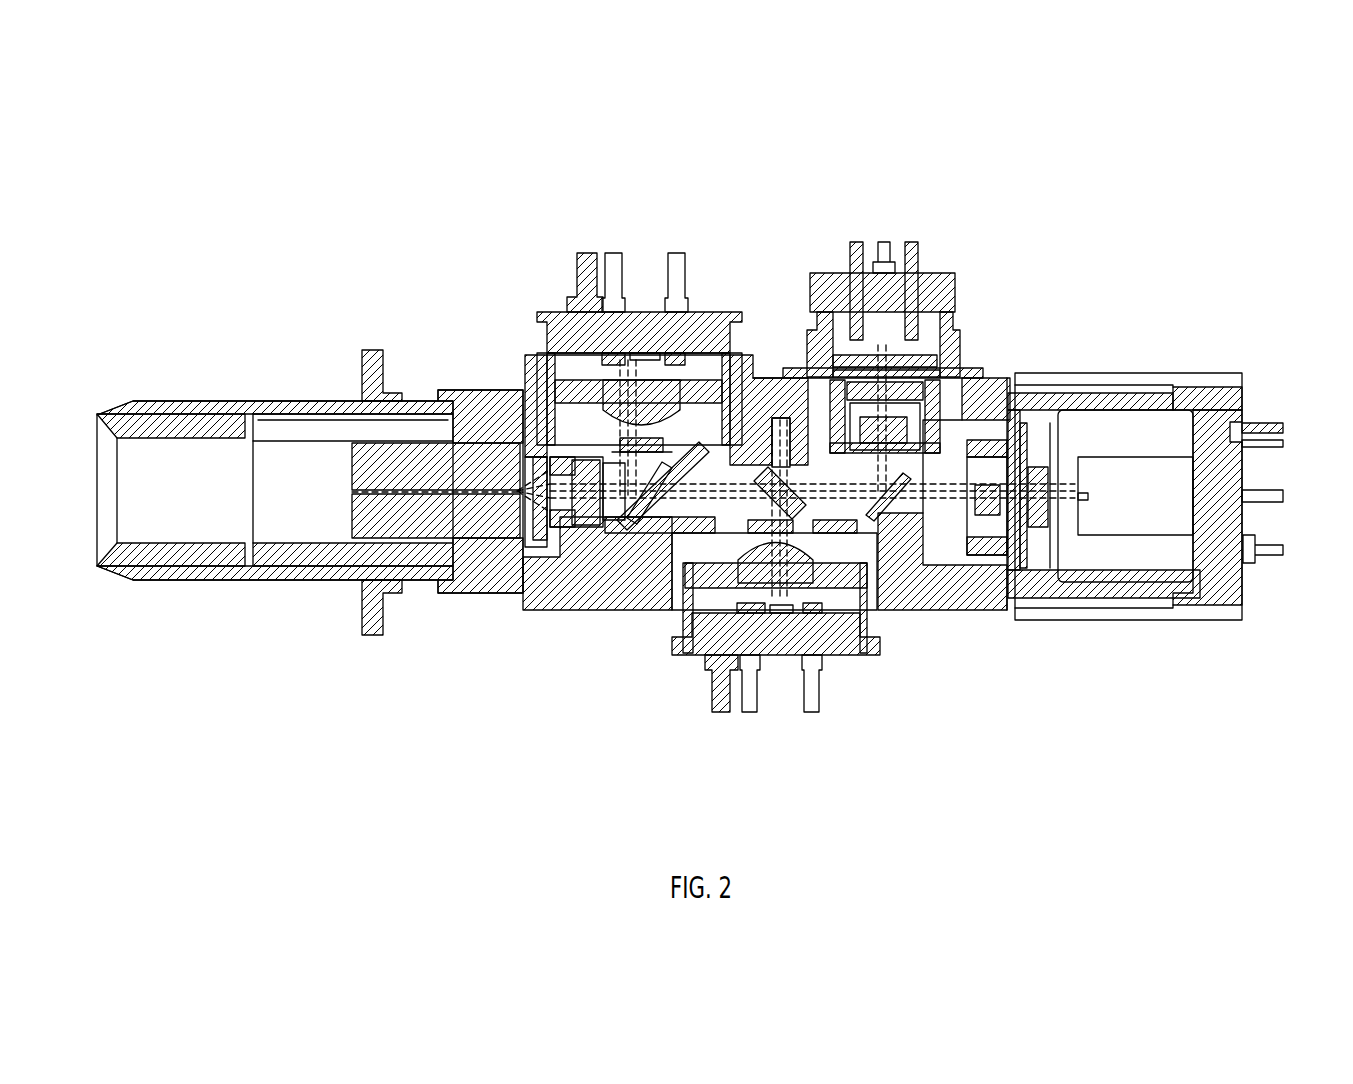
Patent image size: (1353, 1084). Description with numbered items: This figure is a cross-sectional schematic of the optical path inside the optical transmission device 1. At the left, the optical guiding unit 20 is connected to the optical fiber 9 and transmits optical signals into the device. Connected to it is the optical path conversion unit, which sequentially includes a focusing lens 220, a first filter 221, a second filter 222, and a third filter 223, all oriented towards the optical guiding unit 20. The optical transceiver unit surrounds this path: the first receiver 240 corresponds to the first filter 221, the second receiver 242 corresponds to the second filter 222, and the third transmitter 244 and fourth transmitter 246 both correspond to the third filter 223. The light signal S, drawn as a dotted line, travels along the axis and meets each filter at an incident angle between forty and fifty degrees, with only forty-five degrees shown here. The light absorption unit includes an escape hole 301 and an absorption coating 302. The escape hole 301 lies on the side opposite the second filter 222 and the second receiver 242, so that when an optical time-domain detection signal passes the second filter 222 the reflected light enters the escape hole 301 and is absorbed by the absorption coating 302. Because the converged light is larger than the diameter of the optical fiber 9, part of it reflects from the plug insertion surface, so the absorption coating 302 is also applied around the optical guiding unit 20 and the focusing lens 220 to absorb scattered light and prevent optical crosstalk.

The optical transceiver assembly 1 is at (1207, 245).
The optical fiber 9 is at (457, 487).
The optical guiding unit 20 is at (363, 397).
The focusing lens 220 is at (575, 505).
The first filter 221 is at (537, 397).
The second filter 222 is at (780, 467).
The third filter 223 is at (850, 520).
The first receiver 240 is at (703, 603).
The second receiver 242 is at (692, 333).
The third transmitter 244 is at (930, 370).
The fourth transmitter 246 is at (1140, 430).
The escape hole 301 is at (795, 423).
The absorption coating 302 is at (519, 468).
The light signal S is at (1037, 520).